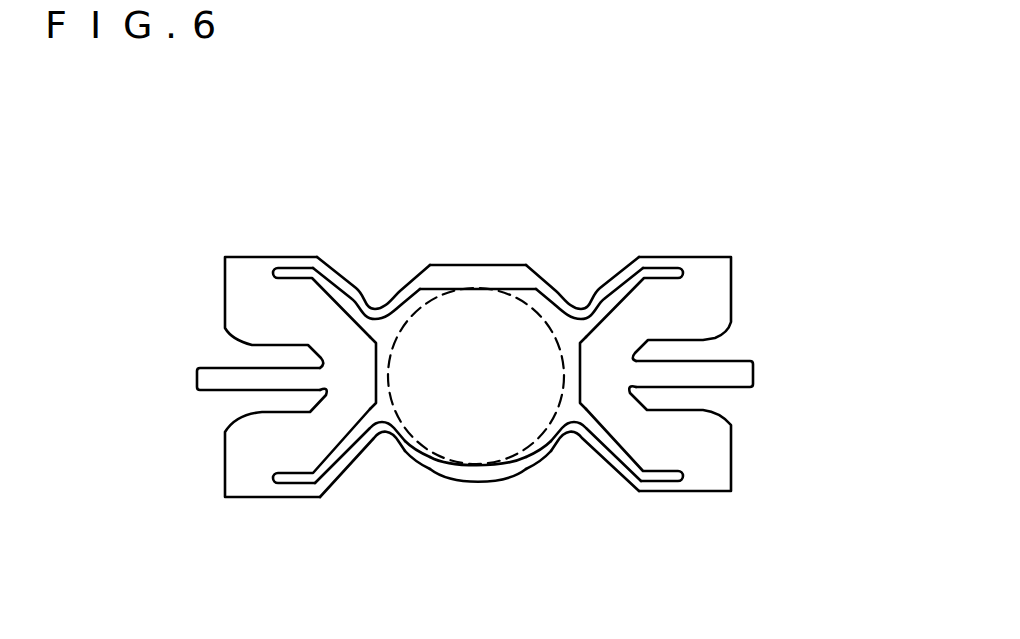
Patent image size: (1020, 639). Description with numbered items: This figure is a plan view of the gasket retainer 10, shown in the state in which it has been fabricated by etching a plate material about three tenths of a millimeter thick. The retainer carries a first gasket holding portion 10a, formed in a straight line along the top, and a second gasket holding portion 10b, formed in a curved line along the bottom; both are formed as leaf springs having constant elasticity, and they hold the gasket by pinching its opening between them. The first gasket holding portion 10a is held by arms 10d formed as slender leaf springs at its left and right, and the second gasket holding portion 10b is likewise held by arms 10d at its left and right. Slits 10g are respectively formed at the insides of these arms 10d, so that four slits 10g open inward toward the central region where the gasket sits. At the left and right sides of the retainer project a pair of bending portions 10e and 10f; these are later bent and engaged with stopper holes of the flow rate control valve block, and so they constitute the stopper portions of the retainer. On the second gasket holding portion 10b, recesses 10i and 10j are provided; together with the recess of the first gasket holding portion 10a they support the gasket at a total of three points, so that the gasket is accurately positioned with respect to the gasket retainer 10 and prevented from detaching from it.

The gasket retainer 10 is at (729, 221).
The first gasket holding portion 10a is at (493, 275).
The second gasket holding portion 10b is at (486, 481).
The arms 10d is at (335, 271).
The bending portion 10e is at (743, 373).
The bending portion 10f is at (208, 371).
The slits 10g is at (352, 297).
The recess 10i is at (407, 445).
The recess 10j is at (532, 448).